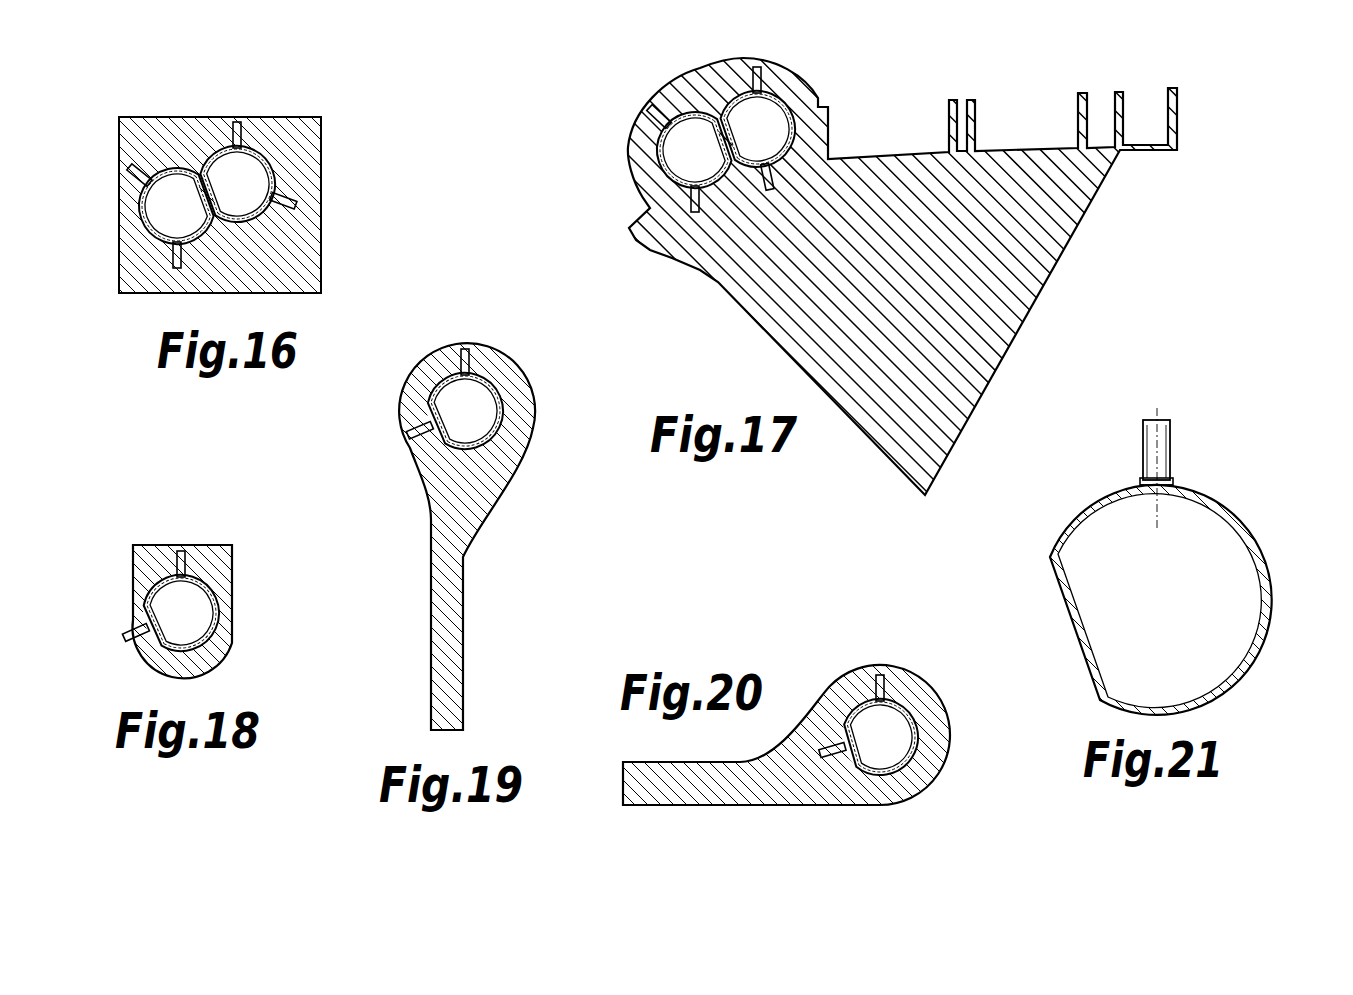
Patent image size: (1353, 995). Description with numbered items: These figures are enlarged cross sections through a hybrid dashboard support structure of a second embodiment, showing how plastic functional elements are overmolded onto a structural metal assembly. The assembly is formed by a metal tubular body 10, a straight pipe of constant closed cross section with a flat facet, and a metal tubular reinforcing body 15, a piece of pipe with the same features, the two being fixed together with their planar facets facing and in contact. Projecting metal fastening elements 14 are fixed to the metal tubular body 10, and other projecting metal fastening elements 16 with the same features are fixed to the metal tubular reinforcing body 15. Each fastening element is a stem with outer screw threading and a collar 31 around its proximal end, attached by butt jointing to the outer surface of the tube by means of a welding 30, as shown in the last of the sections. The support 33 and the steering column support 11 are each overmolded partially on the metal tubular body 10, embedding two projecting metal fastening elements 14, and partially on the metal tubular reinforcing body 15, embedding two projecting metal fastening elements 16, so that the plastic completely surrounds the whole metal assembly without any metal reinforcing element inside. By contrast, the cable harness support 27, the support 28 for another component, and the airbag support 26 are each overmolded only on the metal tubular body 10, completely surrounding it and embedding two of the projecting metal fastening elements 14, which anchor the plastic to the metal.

In FIG. 16, the metal tubular body 10 is at (272, 170).
In FIG. 17, the metal tubular body 10 is at (793, 110).
In FIG. 18, the metal tubular body 10 is at (215, 598).
In FIG. 19, the metal tubular body 10 is at (500, 385).
In FIG. 20, the metal tubular body 10 is at (915, 712).
In FIG. 21, the metal tubular body 10 is at (1252, 535).
In FIG. 17, the steering column support 11 is at (765, 315).
In FIG. 16, the projecting metal fastening elements 14 is at (240, 130).
In FIG. 17, the projecting metal fastening elements 14 is at (758, 70).
In FIG. 18, the projecting metal fastening elements 14 is at (188, 556).
In FIG. 19, the projecting metal fastening elements 14 is at (470, 352).
In FIG. 20, the projecting metal fastening elements 14 is at (883, 675).
In FIG. 21, the projecting metal fastening elements 14 is at (1170, 440).
In FIG. 16, the metal tubular reinforcing body 15 is at (142, 212).
In FIG. 17, the metal tubular reinforcing body 15 is at (660, 152).
In FIG. 16, the projecting metal fastening elements 16 is at (130, 178).
In FIG. 17, the projecting metal fastening elements 16 is at (648, 112).
In FIG. 20, the airbag support 26 is at (935, 785).
In FIG. 18, the cable harness support 27 is at (236, 648).
In FIG. 19, the support 28 is at (463, 620).
In FIG. 21, the welding 30 is at (1175, 483).
In FIG. 21, the collar 31 is at (1140, 481).
In FIG. 16, the support 33 is at (163, 120).